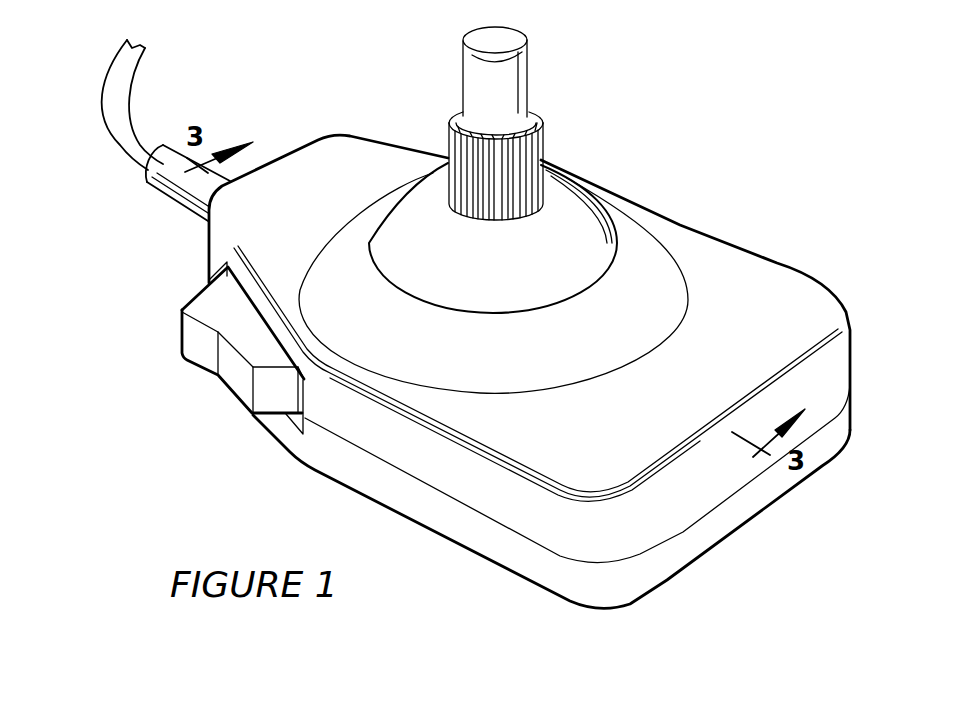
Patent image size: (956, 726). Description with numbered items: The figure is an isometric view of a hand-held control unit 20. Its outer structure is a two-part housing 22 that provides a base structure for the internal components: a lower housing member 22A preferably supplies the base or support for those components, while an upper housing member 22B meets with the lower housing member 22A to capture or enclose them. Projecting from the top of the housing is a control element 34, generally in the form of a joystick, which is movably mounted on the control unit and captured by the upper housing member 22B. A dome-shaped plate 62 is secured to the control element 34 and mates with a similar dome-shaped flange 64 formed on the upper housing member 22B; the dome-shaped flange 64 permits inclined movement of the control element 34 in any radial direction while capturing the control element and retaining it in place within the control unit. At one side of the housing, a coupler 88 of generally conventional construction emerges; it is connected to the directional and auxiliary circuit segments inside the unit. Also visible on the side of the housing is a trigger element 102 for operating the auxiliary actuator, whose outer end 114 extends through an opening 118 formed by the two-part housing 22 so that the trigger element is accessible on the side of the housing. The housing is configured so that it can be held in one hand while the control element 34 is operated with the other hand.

The hand-held control unit 20 is at (474, 317).
The two-part housing 22 is at (530, 371).
The lower housing member 22A is at (712, 544).
The upper housing member 22B is at (702, 498).
The control element 34 is at (542, 157).
The dome-shaped plate 62 is at (535, 290).
The dome-shaped flange 64 is at (542, 361).
The coupler 88 is at (192, 221).
The trigger element 102 is at (201, 350).
The outer end 114 is at (207, 368).
The opening 118 is at (227, 272).